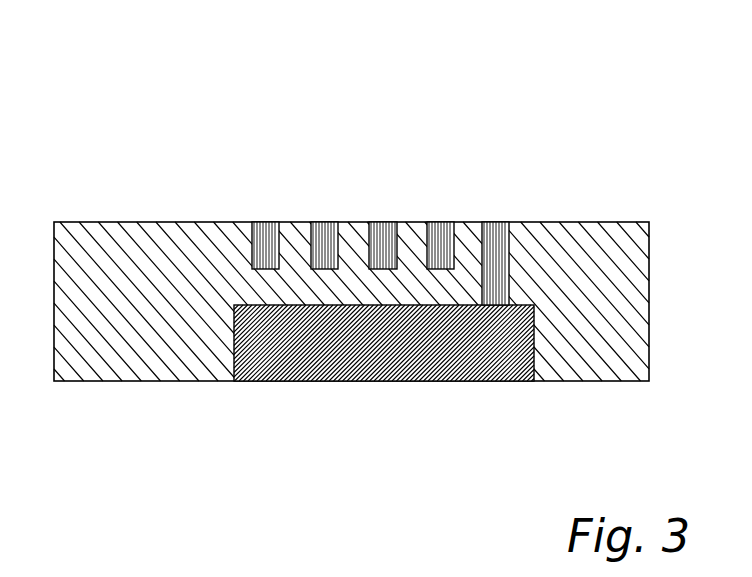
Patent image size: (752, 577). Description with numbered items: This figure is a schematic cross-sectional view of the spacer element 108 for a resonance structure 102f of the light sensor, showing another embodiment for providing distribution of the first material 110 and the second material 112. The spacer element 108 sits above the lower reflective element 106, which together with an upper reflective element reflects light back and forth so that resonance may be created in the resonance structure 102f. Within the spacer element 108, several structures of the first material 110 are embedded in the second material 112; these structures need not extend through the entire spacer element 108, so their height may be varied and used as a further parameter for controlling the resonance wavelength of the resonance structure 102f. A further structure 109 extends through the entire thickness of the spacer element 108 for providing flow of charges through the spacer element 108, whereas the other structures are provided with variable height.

The resonance structure 102f is at (260, 128).
The lower reflective element 106 is at (258, 372).
The spacer element 108 is at (533, 258).
The structure 109 is at (493, 222).
The first material 110 is at (437, 222).
The second material 112 is at (350, 222).